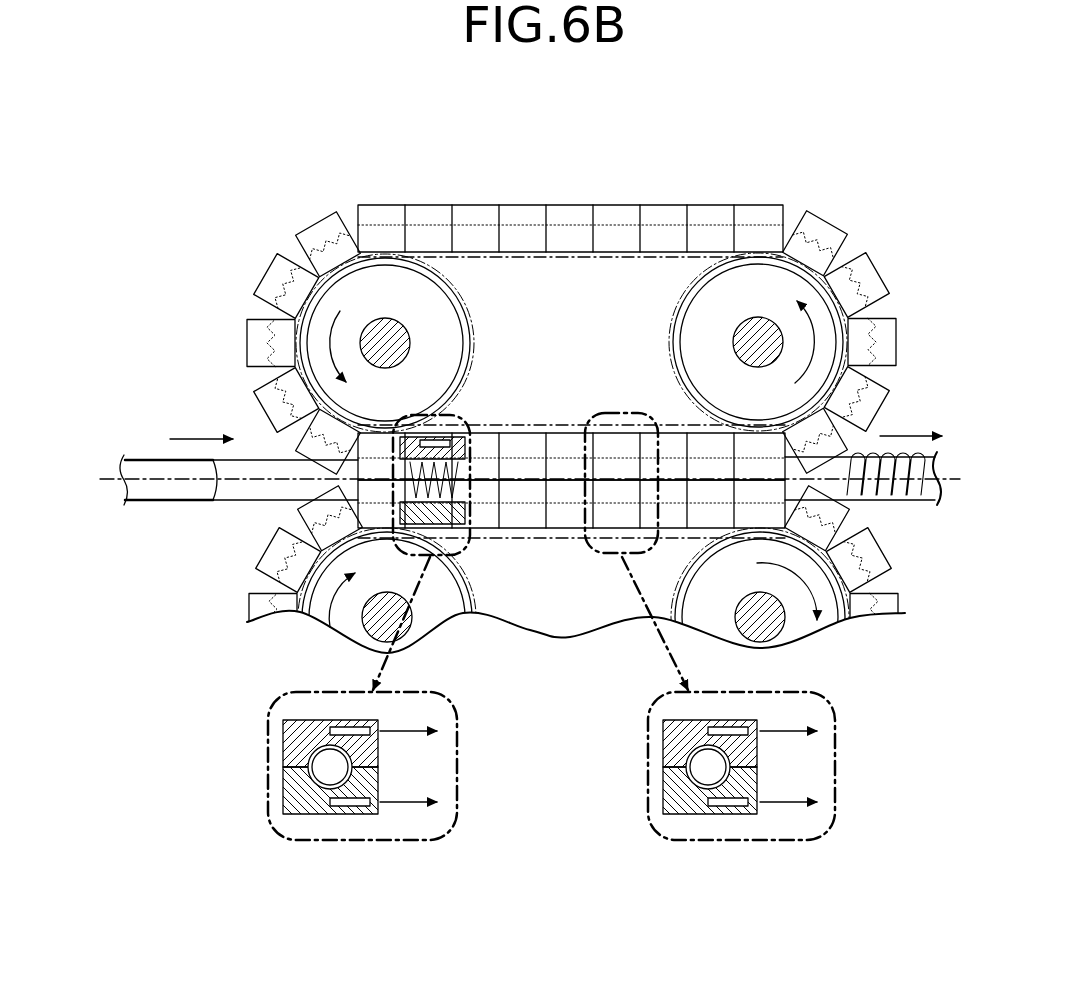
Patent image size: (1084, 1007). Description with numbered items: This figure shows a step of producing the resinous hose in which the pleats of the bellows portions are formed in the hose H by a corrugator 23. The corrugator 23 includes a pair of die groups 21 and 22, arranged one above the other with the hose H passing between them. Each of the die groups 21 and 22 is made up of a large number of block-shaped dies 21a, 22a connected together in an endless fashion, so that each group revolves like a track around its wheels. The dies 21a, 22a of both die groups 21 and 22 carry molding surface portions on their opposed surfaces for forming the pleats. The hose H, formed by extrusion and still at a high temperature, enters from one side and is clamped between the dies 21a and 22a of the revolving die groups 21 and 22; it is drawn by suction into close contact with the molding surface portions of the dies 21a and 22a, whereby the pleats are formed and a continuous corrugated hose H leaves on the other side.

The die group 21 is at (252, 272).
The block-shaped die 21a is at (473, 205).
The die group 22 is at (245, 587).
The block-shaped die 22a is at (265, 562).
The corrugator 23 is at (650, 183).
The hose H is at (145, 460).